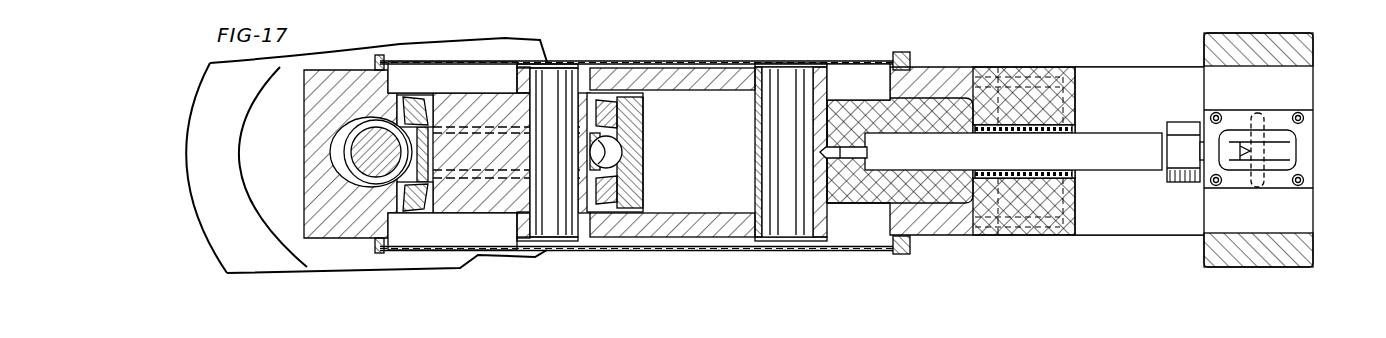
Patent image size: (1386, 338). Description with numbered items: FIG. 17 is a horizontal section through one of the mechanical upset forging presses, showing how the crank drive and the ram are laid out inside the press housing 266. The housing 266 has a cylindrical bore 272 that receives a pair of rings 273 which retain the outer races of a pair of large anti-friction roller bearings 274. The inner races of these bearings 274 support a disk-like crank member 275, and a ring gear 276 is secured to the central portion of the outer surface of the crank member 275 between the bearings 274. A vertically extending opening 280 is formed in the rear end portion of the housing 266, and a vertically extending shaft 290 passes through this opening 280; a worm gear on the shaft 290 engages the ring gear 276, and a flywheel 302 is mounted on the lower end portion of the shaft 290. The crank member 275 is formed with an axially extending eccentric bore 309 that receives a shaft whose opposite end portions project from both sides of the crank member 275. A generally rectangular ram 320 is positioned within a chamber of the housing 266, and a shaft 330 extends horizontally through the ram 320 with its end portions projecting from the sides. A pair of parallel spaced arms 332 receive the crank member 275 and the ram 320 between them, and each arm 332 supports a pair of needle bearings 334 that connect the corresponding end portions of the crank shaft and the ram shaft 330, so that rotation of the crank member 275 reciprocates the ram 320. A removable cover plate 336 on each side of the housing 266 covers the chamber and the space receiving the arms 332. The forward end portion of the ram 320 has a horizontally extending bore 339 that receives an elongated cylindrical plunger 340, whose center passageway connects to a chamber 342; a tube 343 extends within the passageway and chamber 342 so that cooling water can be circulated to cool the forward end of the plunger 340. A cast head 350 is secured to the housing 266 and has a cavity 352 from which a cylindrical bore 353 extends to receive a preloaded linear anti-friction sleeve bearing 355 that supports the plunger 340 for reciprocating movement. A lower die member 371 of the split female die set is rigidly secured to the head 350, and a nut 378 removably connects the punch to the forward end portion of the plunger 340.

The housing 266 is at (300, 205).
The cylindrical bore 272 is at (633, 127).
The rings 273 is at (617, 113).
The anti-friction roller bearings 274 is at (602, 55).
The crank member 275 is at (450, 97).
The ring gear 276 is at (612, 152).
The vertically extending opening 280 is at (332, 138).
The vertically extending shaft 290 is at (368, 153).
The flywheel 302 is at (205, 83).
The eccentric bore 309 is at (525, 115).
The ram 320 is at (865, 197).
The shaft 330 is at (775, 72).
The arms 332 is at (690, 57).
The needle bearings 334 is at (603, 243).
The cover plate 336 is at (638, 60).
The horizontally extending bore 339 is at (933, 130).
The plunger 340 is at (1122, 158).
The chamber 342 is at (845, 143).
The tube 343 is at (867, 152).
The cast head 350 is at (1030, 65).
The cavity 352 is at (1123, 67).
The cylindrical bore 353 is at (1047, 125).
The linear anti-friction sleeve bearing 355 is at (1030, 174).
The lower die member 371 is at (1305, 150).
The nut 378 is at (1178, 125).